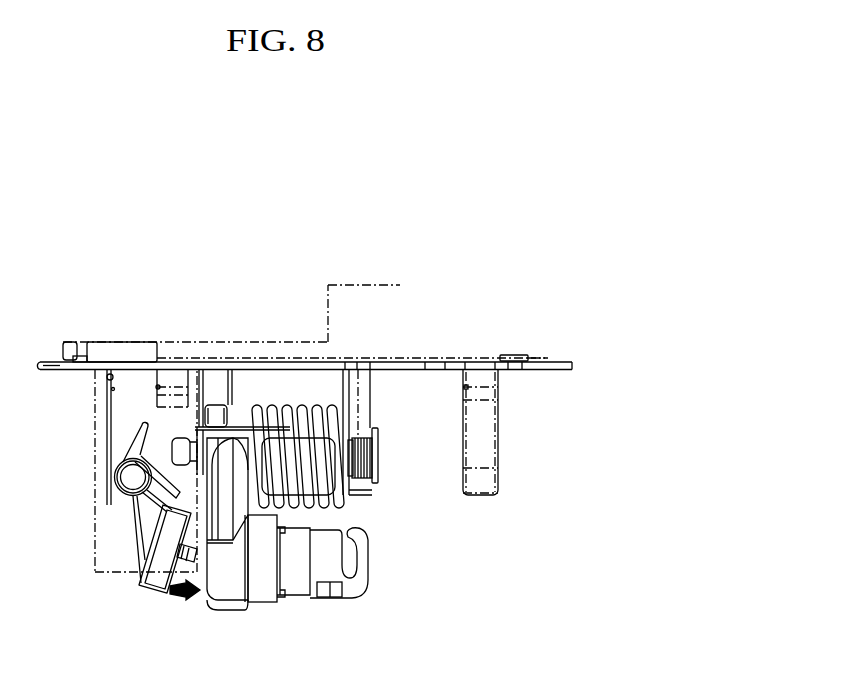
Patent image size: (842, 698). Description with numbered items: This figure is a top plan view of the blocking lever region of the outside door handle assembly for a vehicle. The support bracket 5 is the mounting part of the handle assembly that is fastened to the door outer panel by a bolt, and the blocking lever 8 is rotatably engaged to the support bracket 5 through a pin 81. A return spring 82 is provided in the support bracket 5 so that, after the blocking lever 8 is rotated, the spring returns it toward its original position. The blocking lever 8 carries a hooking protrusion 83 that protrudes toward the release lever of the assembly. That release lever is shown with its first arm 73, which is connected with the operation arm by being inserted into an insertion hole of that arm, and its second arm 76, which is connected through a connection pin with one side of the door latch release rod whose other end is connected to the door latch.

The support bracket 5 is at (95, 549).
The blocking lever 8 is at (123, 434).
The pin 81 is at (128, 482).
The return spring 82 is at (116, 464).
The hooking protrusion 83 is at (186, 552).
The first arm 73 is at (225, 612).
The second arm 76 is at (257, 592).